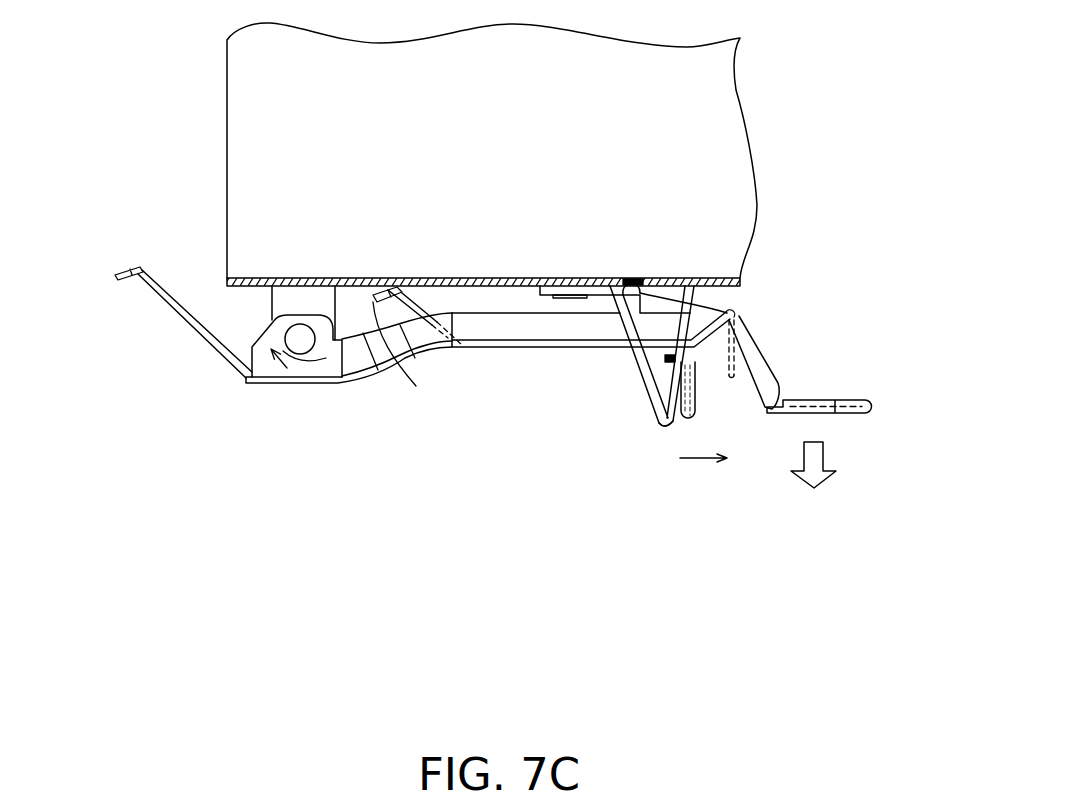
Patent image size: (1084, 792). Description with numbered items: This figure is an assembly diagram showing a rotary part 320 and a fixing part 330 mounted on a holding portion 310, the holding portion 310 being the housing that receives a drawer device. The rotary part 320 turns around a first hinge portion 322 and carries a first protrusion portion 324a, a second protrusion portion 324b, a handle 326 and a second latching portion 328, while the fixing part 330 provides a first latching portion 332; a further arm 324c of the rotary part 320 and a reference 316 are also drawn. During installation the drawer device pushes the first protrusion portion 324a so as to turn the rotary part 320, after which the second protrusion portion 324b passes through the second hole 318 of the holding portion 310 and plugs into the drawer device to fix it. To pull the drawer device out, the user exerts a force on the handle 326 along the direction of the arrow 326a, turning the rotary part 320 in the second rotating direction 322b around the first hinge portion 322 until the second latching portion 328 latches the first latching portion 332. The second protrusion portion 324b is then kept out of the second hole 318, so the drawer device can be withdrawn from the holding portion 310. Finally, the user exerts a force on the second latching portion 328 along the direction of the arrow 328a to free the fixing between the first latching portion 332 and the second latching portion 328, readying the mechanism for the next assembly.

The holding portion 310 is at (550, 175).
The bottom wall of housing 316 is at (718, 286).
The second hole 318 is at (638, 262).
The rotary part 320 is at (330, 396).
The first hinge portion 322 is at (300, 338).
The second rotating direction 322b is at (283, 383).
The first protrusion portion 324a is at (168, 303).
The second protrusion portion 324b is at (733, 316).
The third arm 324c is at (416, 386).
The handle 326 is at (877, 402).
The arrow 326a is at (834, 487).
The second latching portion 328 is at (657, 361).
The arrow 328a is at (697, 470).
The fixing part 330 is at (643, 388).
The first latching portion 332 is at (666, 421).